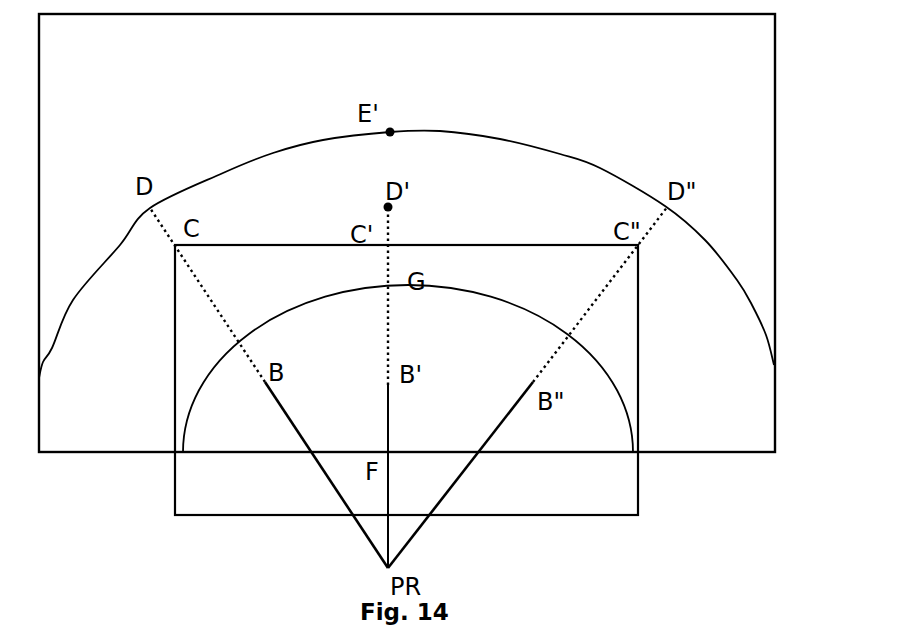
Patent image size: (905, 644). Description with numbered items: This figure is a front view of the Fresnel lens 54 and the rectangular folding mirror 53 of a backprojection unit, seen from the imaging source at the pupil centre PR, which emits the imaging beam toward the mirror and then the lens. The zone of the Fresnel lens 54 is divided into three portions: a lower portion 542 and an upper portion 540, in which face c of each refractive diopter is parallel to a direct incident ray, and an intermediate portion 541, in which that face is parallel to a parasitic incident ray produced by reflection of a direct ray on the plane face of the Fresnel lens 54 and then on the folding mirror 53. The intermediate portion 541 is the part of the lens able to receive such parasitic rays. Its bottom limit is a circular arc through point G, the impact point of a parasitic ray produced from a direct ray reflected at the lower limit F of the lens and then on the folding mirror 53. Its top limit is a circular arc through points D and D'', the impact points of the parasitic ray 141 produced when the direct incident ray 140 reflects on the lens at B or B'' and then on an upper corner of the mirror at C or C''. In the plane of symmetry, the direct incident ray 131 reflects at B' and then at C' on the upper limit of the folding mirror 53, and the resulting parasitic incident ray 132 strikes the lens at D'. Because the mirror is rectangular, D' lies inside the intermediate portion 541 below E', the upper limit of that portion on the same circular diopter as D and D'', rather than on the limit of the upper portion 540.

The folding mirror 53 is at (566, 513).
The Fresnel lens 54 is at (752, 175).
The direct incident ray 131 is at (390, 415).
The parasitic incident ray 132 is at (388, 332).
The direct incident ray 140 is at (322, 470).
The parasitic ray 141 is at (230, 324).
The upper portion 540 is at (468, 80).
The intermediate portion 541 is at (506, 181).
The lower portion 542 is at (440, 366).